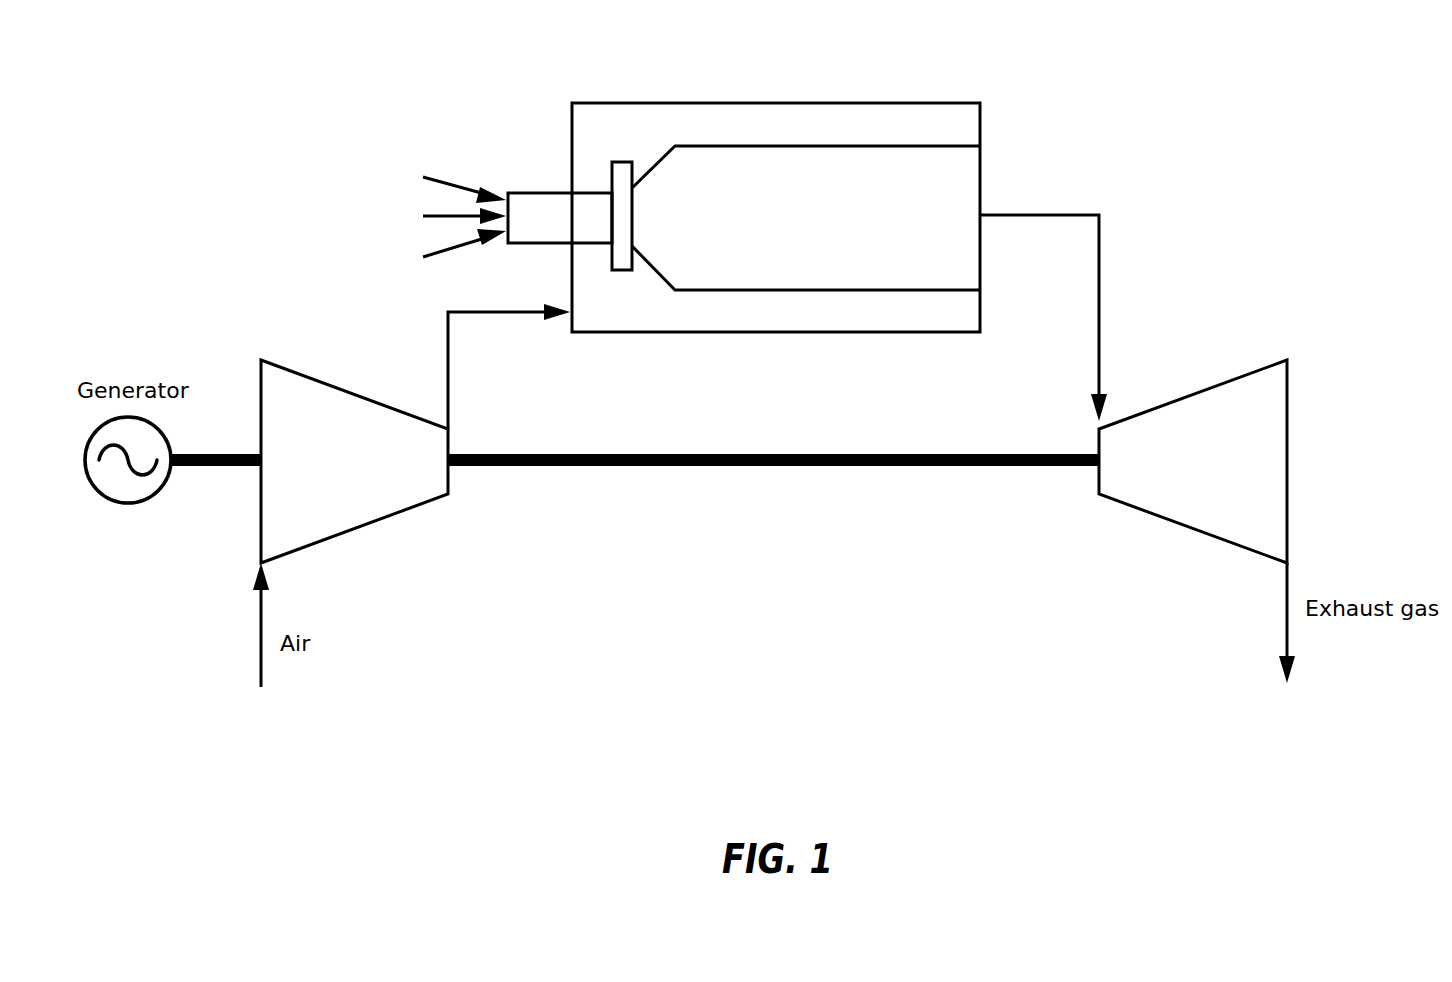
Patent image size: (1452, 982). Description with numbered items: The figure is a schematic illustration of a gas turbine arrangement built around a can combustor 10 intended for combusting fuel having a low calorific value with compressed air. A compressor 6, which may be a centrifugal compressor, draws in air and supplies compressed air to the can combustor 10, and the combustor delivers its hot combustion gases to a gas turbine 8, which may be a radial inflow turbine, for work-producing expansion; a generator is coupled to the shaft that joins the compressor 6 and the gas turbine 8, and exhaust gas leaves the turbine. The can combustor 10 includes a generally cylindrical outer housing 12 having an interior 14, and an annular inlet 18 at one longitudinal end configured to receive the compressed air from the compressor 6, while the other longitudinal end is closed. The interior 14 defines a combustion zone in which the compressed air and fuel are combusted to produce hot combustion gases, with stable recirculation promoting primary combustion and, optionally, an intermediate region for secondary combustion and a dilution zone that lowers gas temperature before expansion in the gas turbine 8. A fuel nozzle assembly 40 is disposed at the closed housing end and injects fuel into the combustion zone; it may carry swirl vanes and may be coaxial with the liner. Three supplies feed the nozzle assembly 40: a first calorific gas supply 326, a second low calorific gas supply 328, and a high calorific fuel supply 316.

The compressor 6 is at (342, 472).
The gas turbine 8 is at (1221, 476).
The can combustor 10 is at (790, 106).
The outer housing 12 is at (790, 291).
The interior 14 is at (830, 236).
The annular inlet 18 is at (563, 313).
The fuel nozzle assembly 40 is at (560, 192).
The first calorific gas supply 326 is at (447, 182).
The second low calorific gas supply 328 is at (447, 217).
The high calorific fuel supply 316 is at (447, 251).